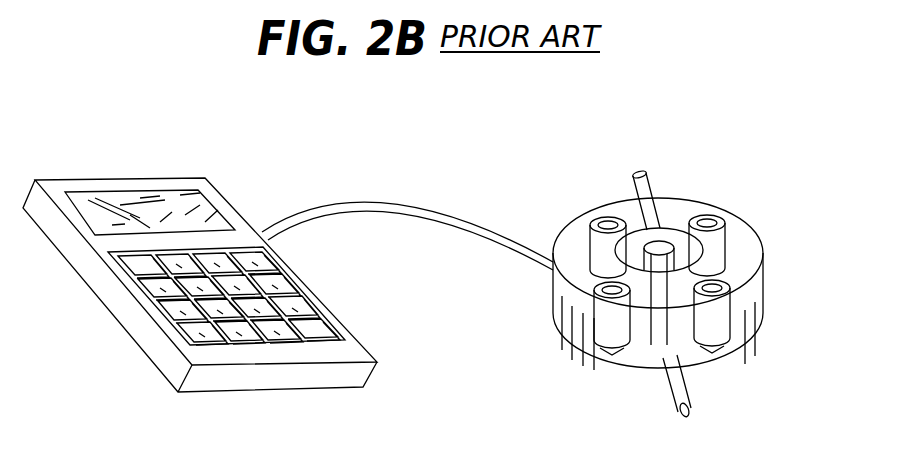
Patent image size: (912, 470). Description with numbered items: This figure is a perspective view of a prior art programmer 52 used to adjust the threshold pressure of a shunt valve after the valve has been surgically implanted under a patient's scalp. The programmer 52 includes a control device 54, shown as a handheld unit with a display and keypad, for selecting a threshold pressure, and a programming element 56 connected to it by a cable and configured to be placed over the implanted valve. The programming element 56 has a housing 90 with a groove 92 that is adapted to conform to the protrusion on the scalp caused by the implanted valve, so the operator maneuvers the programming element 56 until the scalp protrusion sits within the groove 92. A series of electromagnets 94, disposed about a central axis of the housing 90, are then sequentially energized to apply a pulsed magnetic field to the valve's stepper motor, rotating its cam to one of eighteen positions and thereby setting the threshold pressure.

The programmer 52 is at (442, 170).
The control device 54 is at (118, 178).
The programming element 56 is at (701, 181).
The housing 90 is at (750, 252).
The groove 92 is at (632, 358).
The electromagnets 94 is at (590, 245).